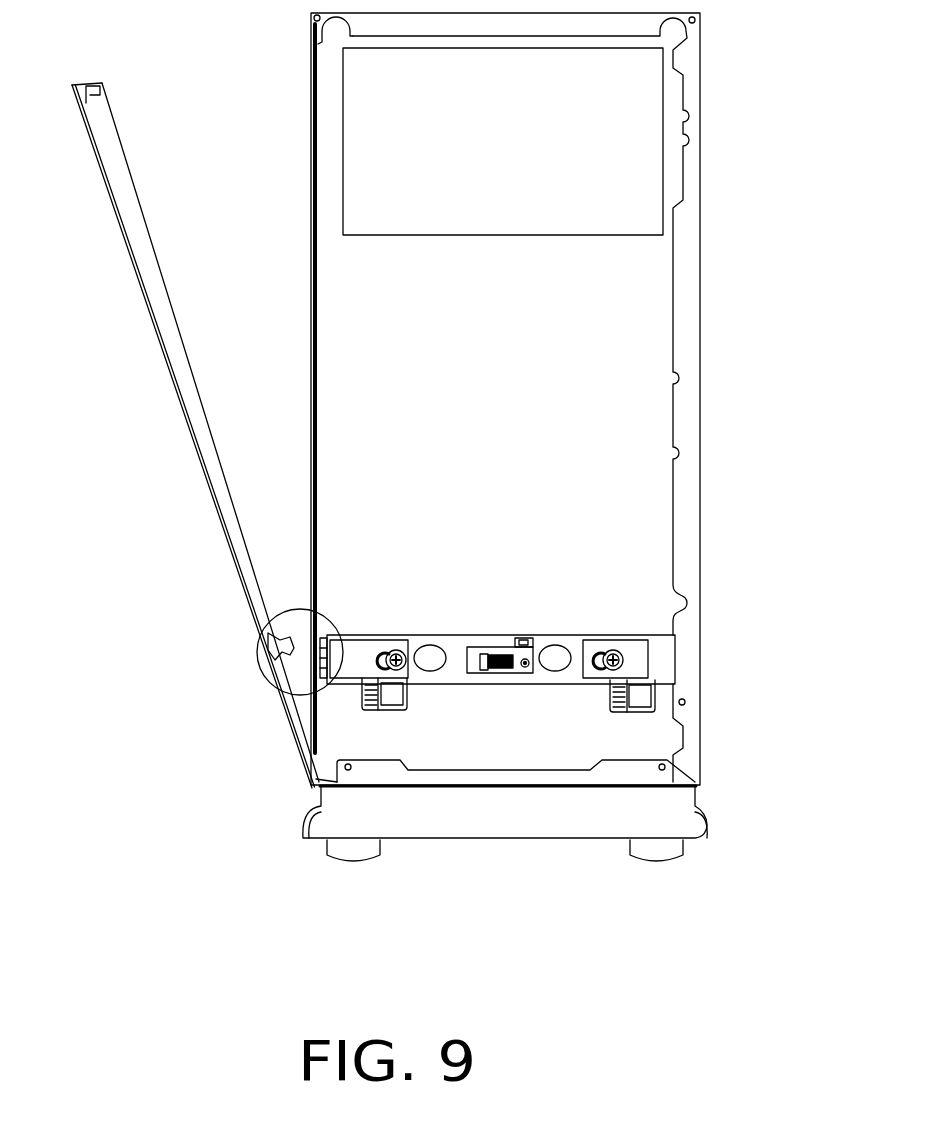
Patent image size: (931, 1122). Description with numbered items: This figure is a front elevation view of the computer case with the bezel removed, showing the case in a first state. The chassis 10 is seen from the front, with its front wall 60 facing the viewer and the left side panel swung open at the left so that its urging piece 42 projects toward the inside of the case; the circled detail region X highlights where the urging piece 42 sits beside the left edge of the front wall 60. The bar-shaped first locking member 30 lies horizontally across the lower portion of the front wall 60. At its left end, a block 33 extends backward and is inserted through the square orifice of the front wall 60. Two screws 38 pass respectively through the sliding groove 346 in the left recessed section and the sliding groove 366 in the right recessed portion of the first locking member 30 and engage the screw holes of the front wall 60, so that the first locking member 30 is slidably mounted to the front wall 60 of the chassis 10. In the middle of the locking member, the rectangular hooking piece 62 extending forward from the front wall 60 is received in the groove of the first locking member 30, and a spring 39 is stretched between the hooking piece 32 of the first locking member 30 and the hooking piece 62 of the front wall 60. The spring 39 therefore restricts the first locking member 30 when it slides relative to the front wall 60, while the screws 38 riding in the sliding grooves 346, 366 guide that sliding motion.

The chassis 10 is at (716, 164).
The front wall 60 is at (630, 352).
The first locking member 30 is at (690, 663).
The block 33 is at (317, 633).
The screw 38 is at (395, 650).
The sliding groove 366 is at (600, 653).
The sliding groove 346 is at (378, 672).
The spring 39 is at (502, 673).
The hooking piece 62 is at (483, 672).
The hooking piece 32 is at (523, 668).
The urging piece 42 is at (263, 633).
The detail region X is at (258, 660).